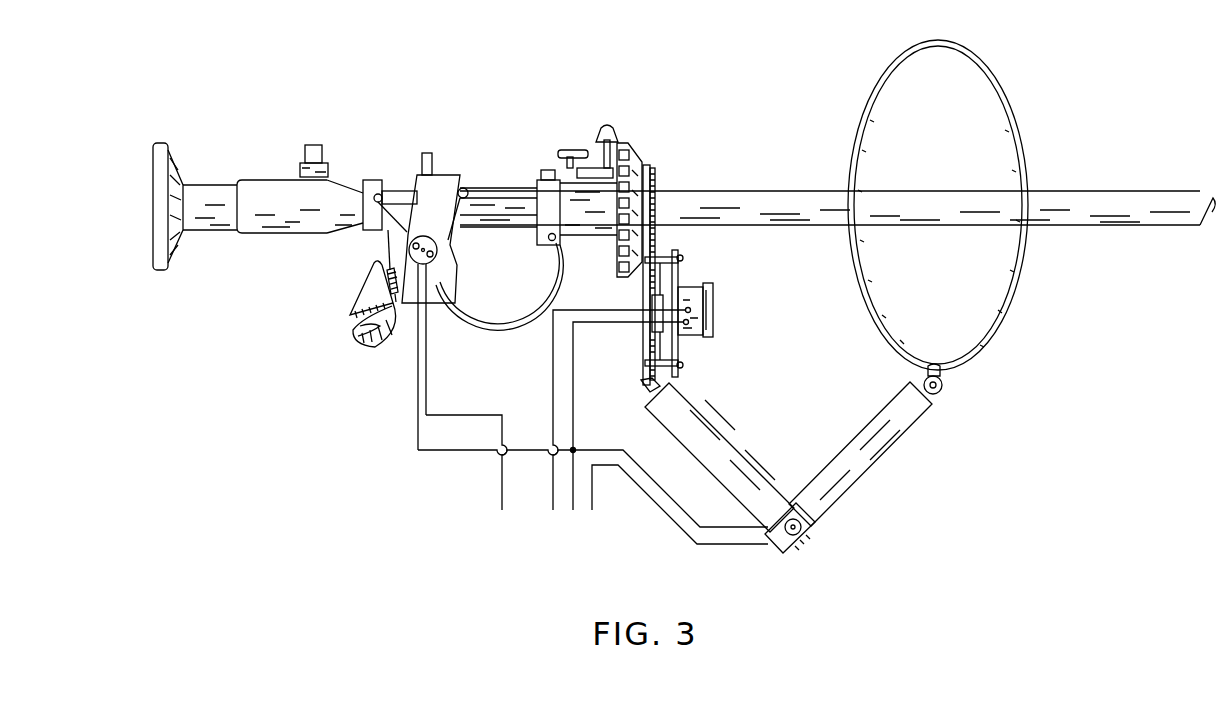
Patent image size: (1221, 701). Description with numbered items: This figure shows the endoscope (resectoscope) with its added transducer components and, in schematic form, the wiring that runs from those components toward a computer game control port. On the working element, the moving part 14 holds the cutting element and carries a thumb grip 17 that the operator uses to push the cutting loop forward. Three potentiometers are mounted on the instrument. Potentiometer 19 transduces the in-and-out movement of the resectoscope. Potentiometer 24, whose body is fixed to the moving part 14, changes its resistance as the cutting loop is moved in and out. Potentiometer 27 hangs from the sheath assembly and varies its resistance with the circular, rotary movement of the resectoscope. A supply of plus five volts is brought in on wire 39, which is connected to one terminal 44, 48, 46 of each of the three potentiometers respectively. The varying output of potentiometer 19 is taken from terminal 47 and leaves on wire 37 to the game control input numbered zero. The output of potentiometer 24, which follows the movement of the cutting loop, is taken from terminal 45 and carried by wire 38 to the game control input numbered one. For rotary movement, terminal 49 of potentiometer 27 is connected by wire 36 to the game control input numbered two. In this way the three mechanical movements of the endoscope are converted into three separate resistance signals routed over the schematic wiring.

The moving part 14 is at (390, 275).
The thumb grip 17 is at (383, 350).
The potentiometer 19 is at (800, 548).
The potentiometer 24 is at (432, 264).
The potentiometer 27 is at (714, 305).
The wire 36 is at (602, 421).
The wire 37 is at (680, 504).
The wire 38 is at (593, 477).
The wire 39 is at (622, 431).
The terminal 44 is at (782, 512).
The terminal 45 is at (409, 239).
The terminal 46 is at (692, 327).
The terminal 47 is at (793, 527).
The terminal 48 is at (410, 250).
The terminal 49 is at (690, 292).